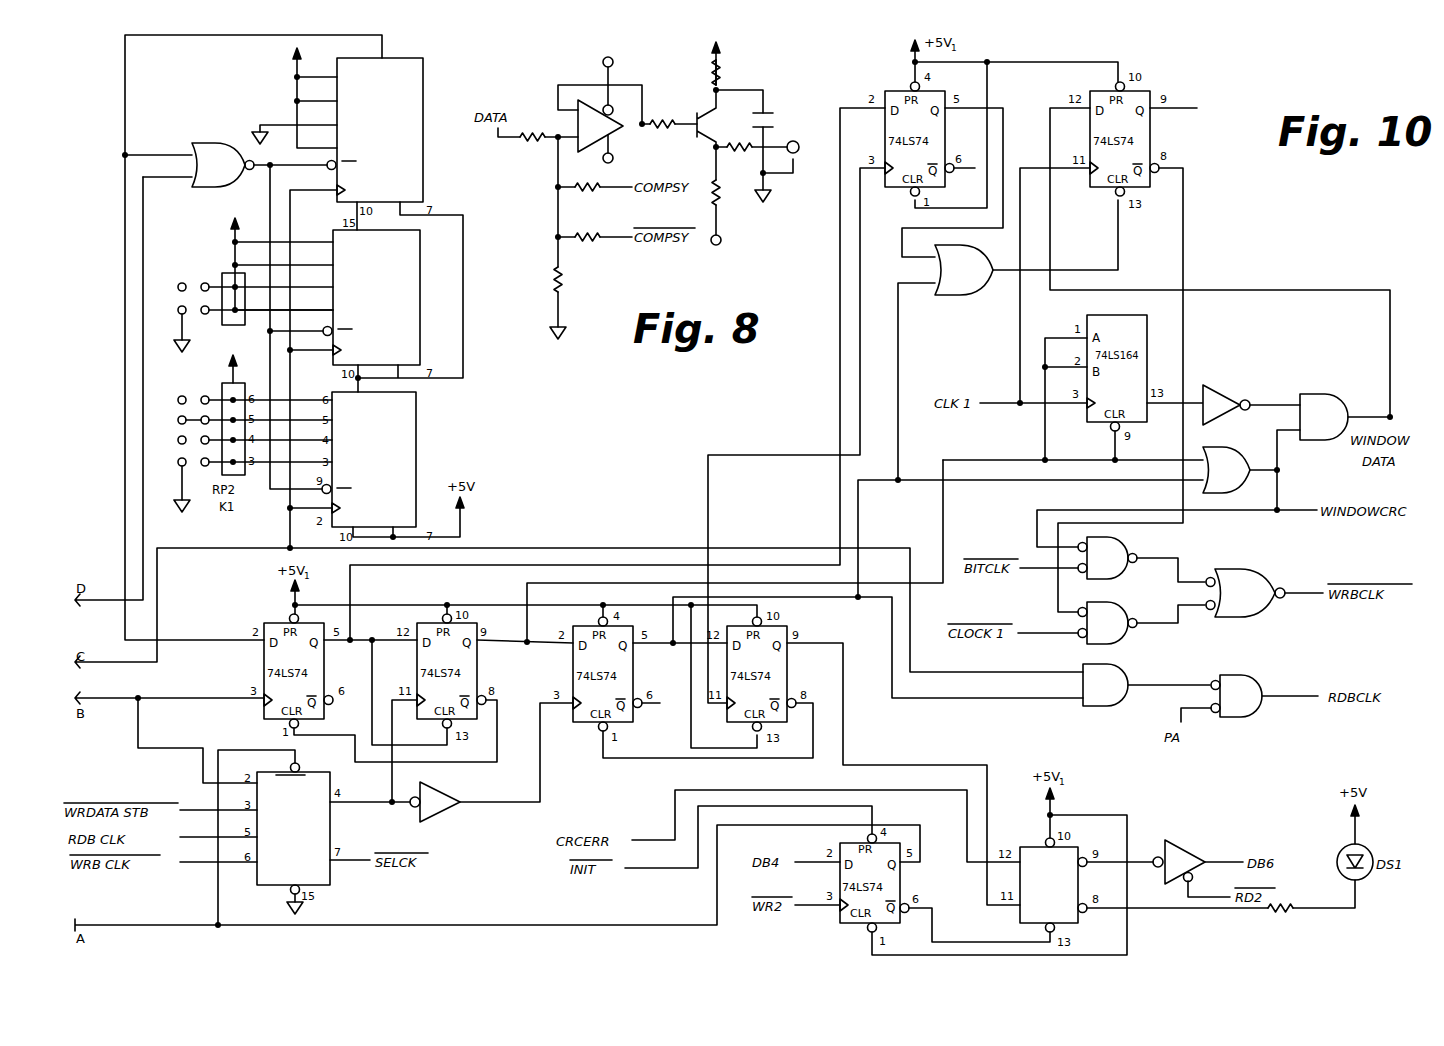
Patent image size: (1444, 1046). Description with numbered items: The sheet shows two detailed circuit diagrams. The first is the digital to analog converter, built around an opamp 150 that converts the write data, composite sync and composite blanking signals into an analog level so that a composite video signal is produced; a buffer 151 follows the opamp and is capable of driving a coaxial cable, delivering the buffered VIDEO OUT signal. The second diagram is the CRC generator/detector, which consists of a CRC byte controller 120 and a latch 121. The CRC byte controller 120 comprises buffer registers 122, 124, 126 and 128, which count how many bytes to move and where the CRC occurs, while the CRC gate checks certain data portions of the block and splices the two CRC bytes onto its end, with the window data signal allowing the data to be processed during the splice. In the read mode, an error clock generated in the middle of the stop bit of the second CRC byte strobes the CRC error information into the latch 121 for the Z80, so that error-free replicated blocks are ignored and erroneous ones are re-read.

In FIG. 8, the opamp 150 is at (570, 84).
In FIG. 8, the buffer 151 is at (760, 90).
In FIG. 10, the CRC byte controller 120 is at (518, 527).
In FIG. 10, the latch 121 is at (1053, 885).
In FIG. 10, the buffer register 122 is at (375, 130).
In FIG. 10, the buffer register 124 is at (371, 297).
In FIG. 10, the buffer register 126 is at (369, 459).
In FIG. 10, the buffer register 128 is at (293, 828).